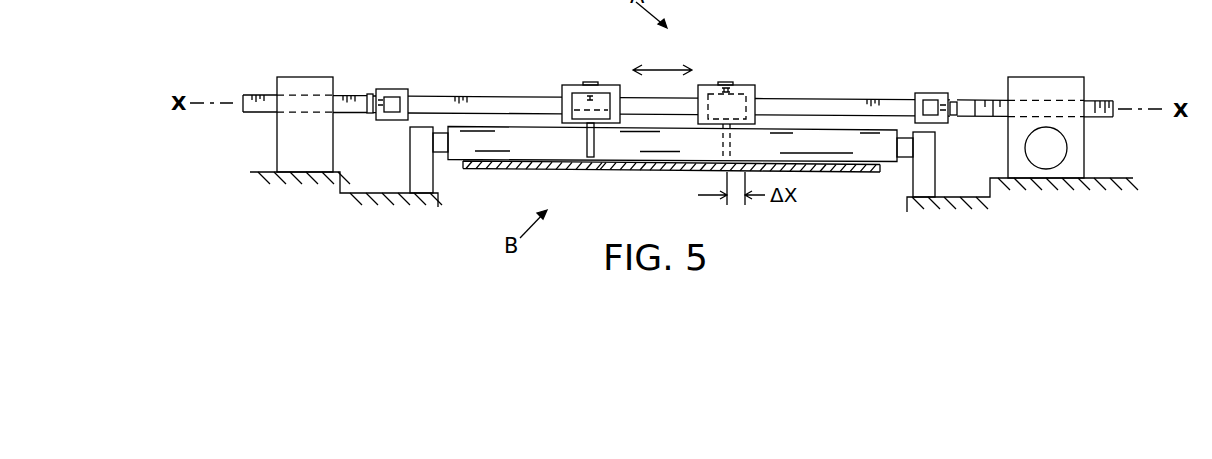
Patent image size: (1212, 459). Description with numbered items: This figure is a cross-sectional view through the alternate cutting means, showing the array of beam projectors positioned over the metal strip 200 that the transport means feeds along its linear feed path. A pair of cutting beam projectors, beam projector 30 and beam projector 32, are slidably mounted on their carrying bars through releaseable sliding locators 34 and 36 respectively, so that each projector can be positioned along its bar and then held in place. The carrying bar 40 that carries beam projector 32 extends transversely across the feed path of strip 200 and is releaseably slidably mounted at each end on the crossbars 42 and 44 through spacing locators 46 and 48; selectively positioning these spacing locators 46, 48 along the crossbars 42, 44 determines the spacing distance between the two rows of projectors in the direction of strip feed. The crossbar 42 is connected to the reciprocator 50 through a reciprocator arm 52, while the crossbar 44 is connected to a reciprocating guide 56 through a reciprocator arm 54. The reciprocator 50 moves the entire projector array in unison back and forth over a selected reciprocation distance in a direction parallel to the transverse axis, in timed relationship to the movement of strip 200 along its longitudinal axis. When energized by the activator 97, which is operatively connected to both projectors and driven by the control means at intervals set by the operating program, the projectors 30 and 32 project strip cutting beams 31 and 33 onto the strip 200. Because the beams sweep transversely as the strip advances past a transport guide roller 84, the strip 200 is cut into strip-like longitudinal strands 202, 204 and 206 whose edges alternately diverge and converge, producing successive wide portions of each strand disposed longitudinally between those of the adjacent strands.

The beam projector 30 is at (738, 86).
The projected beam 31 is at (721, 143).
The beam projector 32 is at (607, 86).
The projected beam 33 is at (587, 141).
The releaseable sliding locator 34 is at (752, 85).
The releaseable sliding locator 36 is at (578, 95).
The carrying bar 40 is at (502, 98).
The crossbar 42 is at (930, 103).
The crossbar 44 is at (390, 97).
The spacing locator 46 is at (940, 93).
The spacing locator 48 is at (402, 92).
The reciprocator 50 is at (1047, 80).
The reciprocator arm 52 is at (988, 100).
The reciprocator arm 54 is at (355, 97).
The reciprocating guide 56 is at (293, 81).
The transport guide roller 84 is at (461, 148).
The activator 97 is at (1060, 147).
The metal strip 200 is at (812, 158).
The strand 202 is at (838, 171).
The strand 204 is at (659, 169).
The strand 206 is at (532, 164).